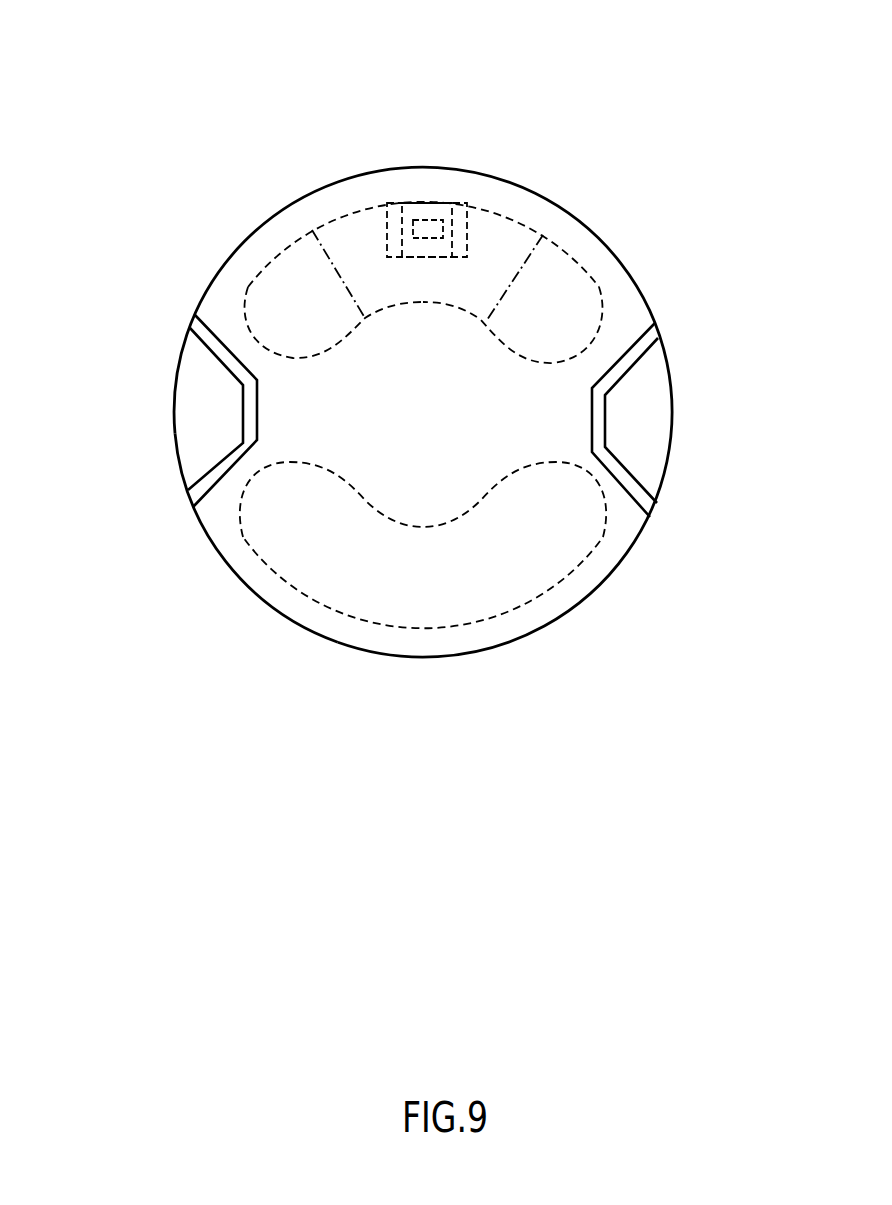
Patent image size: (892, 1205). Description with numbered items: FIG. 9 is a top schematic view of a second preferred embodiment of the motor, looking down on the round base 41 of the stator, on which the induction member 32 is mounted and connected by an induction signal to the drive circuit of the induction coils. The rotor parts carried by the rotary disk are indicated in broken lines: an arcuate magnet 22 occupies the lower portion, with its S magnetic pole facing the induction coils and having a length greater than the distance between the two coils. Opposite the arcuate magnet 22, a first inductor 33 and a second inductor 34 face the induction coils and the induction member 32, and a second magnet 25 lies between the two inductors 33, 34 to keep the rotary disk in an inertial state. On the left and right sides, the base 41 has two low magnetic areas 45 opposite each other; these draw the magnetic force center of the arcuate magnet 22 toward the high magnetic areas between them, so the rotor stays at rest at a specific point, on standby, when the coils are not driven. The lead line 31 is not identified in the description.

The arcuate magnet 22 is at (542, 578).
The magnet 25 is at (352, 223).
The upper heating pad 31 is at (530, 212).
The induction member 32 is at (431, 222).
The first inductor 33 is at (263, 298).
The second inductor 34 is at (585, 312).
The base 41 is at (233, 553).
The low magnetic areas 45 is at (197, 410).